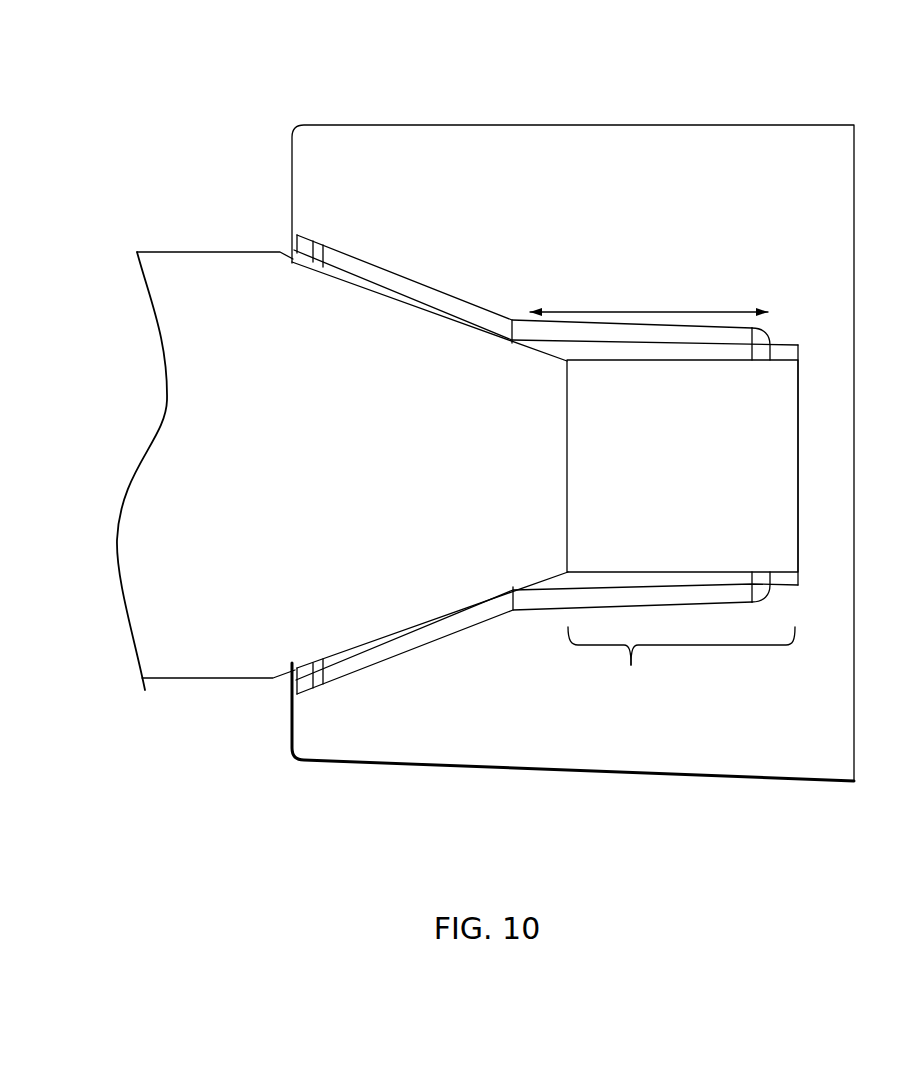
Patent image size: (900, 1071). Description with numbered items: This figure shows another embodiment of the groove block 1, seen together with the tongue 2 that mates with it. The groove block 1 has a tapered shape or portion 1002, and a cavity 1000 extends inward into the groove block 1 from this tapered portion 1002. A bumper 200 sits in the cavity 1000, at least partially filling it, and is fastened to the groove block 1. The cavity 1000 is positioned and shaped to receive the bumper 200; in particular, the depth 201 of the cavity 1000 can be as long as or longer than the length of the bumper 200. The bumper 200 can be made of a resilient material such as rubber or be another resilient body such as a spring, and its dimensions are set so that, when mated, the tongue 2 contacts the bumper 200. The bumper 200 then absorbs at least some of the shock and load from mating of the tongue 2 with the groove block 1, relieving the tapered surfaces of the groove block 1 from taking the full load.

The groove block 1 is at (715, 192).
The tongue 2 is at (177, 325).
The bumper 200 is at (676, 482).
The depth 201 is at (595, 290).
The cavity 1000 is at (681, 662).
The tapered shape or portion 1002 is at (557, 690).